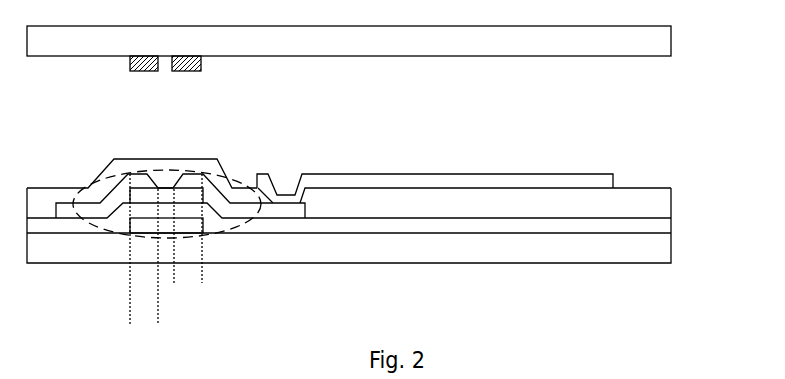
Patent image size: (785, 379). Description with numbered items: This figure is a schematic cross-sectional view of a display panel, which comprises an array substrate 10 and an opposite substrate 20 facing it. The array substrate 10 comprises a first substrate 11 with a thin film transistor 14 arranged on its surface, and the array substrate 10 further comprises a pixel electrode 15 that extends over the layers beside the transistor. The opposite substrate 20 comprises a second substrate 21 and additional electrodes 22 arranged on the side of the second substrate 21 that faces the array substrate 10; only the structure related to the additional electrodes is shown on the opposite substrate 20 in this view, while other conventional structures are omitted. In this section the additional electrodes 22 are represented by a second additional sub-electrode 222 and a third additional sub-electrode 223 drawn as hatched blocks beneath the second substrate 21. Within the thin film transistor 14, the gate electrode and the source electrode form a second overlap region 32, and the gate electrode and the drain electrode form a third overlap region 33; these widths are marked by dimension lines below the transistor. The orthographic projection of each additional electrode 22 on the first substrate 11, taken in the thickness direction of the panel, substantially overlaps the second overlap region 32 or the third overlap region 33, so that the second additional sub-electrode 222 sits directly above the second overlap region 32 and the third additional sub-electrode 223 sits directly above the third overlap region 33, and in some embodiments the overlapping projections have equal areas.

The opposite substrate 20 is at (389, 81).
The second substrate 21 is at (650, 41).
The additional electrode 22 is at (104, 102).
The second additional sub-electrode 222 is at (132, 67).
The third additional sub-electrode 223 is at (173, 67).
The array substrate 10 is at (401, 242).
The first substrate 11 is at (650, 248).
The thin film transistor 14 is at (246, 234).
The pixel electrode 15 is at (580, 181).
The second overlap region 32 is at (188, 299).
The third overlap region 33 is at (232, 270).